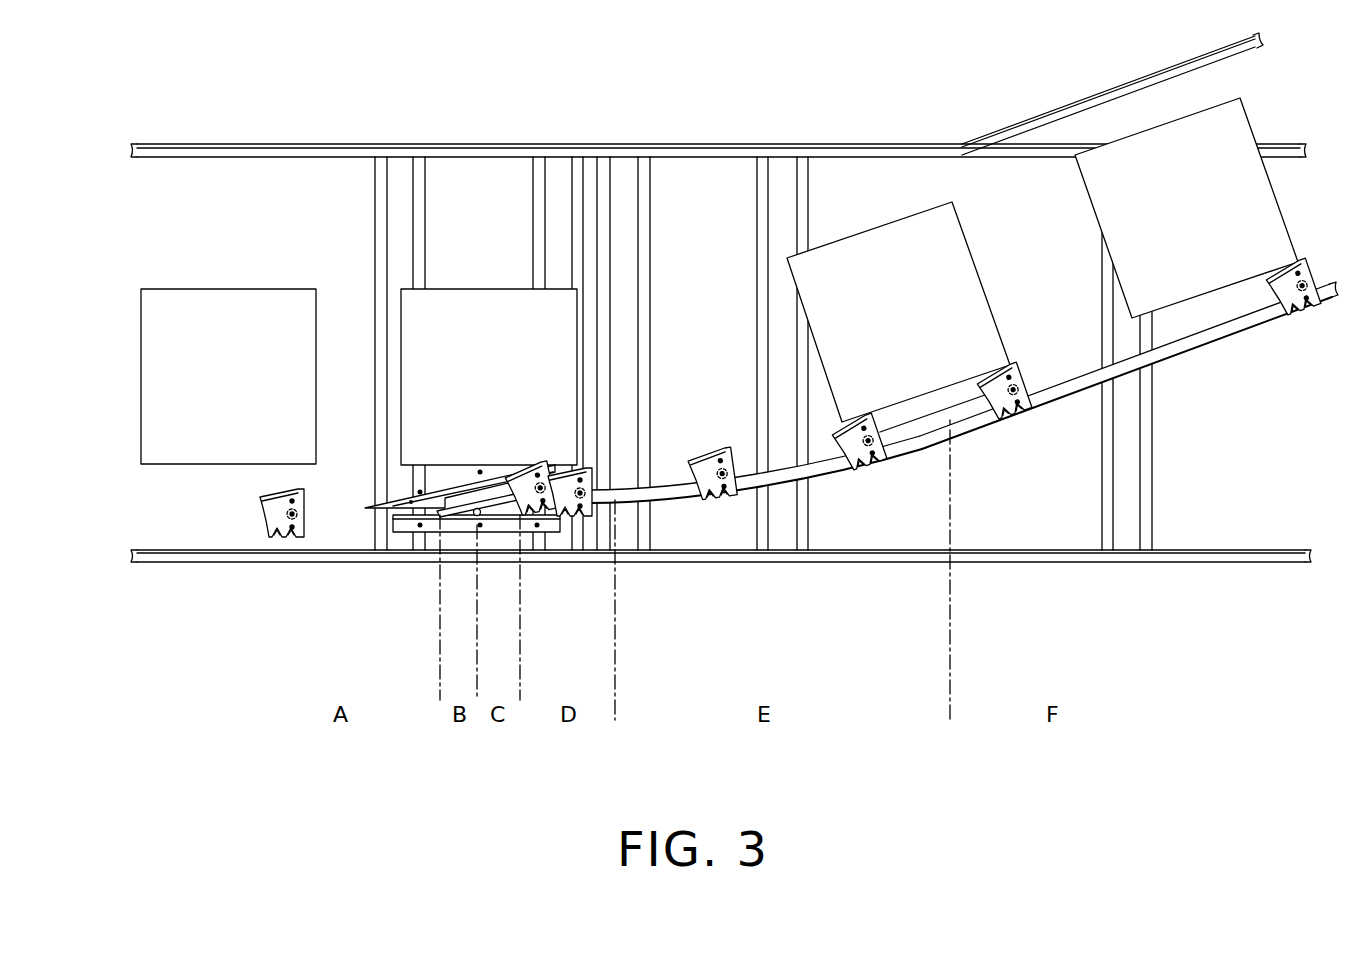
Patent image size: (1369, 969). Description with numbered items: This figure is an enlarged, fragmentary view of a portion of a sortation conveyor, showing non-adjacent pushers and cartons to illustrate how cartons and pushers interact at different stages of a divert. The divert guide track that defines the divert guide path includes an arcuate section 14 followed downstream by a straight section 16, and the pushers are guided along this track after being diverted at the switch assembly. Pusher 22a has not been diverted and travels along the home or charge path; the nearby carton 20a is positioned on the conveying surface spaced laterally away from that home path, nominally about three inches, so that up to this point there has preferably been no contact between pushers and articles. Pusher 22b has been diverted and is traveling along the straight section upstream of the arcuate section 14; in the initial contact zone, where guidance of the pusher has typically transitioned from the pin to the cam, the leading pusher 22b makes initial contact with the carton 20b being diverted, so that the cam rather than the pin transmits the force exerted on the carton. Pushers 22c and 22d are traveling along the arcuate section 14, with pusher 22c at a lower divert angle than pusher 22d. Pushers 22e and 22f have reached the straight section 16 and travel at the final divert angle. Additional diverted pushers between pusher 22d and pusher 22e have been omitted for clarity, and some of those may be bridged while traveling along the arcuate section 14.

The arcuate section 14 is at (679, 485).
The straight section 16 is at (1080, 362).
The carton 20a is at (273, 288).
The carton 20b is at (452, 288).
The pusher 22a is at (262, 500).
The pusher 22b is at (589, 516).
The pusher 22c is at (698, 450).
The pusher 22d is at (861, 466).
The pusher 22e is at (1007, 412).
The pusher 22f is at (1306, 305).